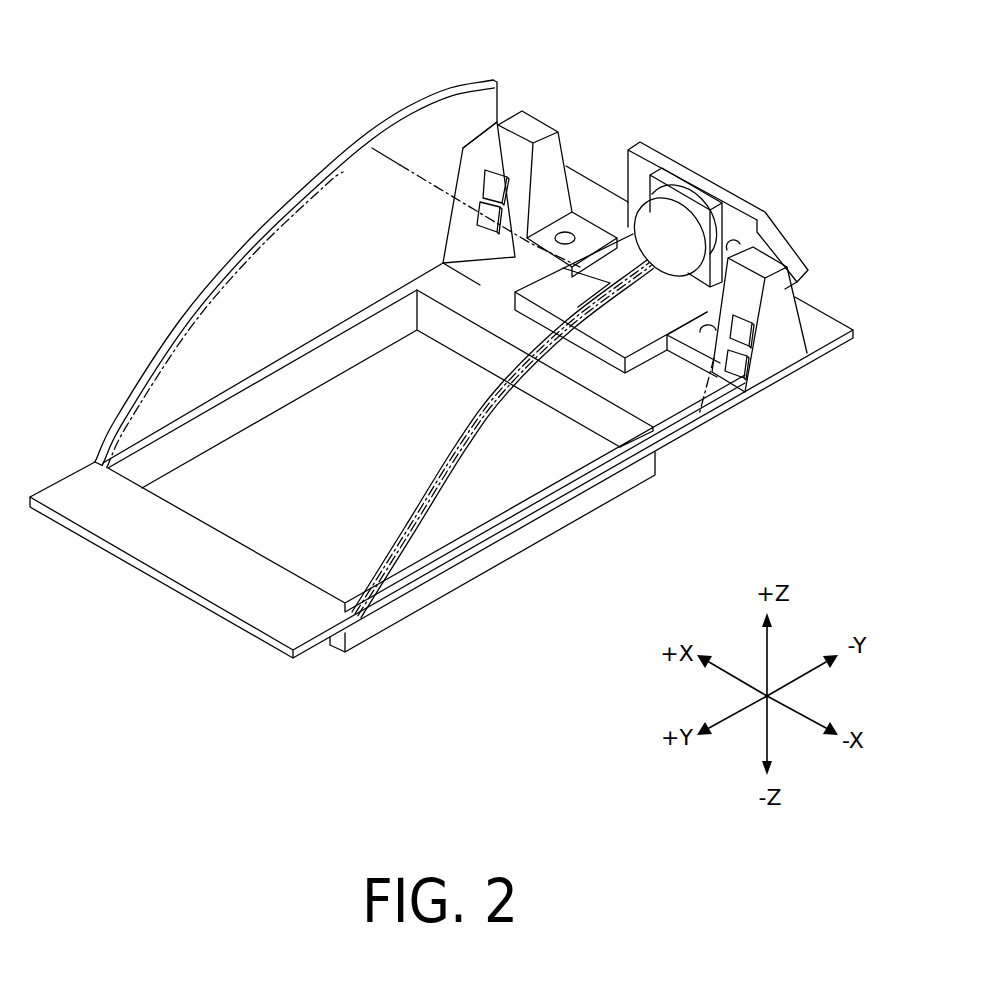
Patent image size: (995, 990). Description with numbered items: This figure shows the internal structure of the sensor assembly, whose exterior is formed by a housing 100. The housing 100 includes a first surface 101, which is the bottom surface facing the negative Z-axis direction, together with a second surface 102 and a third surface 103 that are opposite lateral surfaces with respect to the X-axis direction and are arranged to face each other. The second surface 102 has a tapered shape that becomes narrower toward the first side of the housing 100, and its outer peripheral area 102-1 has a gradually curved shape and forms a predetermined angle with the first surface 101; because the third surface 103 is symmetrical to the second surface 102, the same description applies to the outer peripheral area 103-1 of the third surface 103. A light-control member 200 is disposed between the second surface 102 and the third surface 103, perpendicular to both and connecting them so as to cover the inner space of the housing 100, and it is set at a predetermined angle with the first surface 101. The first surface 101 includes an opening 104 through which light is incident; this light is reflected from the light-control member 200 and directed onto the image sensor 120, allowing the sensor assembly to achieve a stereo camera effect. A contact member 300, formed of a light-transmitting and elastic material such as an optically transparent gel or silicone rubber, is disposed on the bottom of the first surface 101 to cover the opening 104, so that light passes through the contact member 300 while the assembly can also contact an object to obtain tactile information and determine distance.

The housing 100 is at (722, 412).
The first surface 101 is at (444, 258).
The second surface 102 is at (524, 454).
The outer peripheral area of the second surface 102-1 is at (419, 518).
The third surface 103 is at (294, 272).
The outer peripheral area of the third surface 103-1 is at (248, 240).
The opening 104 is at (283, 492).
The image sensor 120 is at (683, 185).
The light-control member 200 is at (370, 192).
The contact member 300 is at (408, 606).